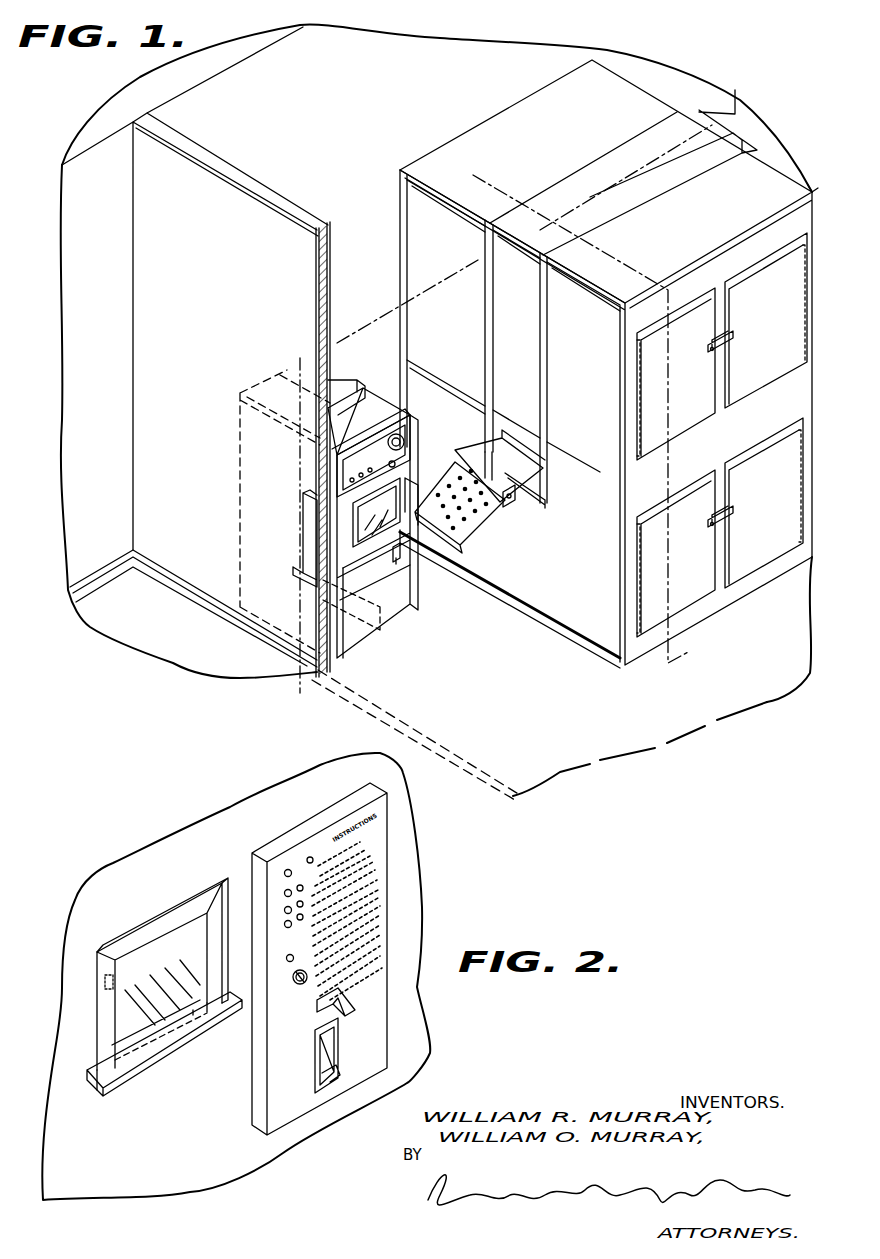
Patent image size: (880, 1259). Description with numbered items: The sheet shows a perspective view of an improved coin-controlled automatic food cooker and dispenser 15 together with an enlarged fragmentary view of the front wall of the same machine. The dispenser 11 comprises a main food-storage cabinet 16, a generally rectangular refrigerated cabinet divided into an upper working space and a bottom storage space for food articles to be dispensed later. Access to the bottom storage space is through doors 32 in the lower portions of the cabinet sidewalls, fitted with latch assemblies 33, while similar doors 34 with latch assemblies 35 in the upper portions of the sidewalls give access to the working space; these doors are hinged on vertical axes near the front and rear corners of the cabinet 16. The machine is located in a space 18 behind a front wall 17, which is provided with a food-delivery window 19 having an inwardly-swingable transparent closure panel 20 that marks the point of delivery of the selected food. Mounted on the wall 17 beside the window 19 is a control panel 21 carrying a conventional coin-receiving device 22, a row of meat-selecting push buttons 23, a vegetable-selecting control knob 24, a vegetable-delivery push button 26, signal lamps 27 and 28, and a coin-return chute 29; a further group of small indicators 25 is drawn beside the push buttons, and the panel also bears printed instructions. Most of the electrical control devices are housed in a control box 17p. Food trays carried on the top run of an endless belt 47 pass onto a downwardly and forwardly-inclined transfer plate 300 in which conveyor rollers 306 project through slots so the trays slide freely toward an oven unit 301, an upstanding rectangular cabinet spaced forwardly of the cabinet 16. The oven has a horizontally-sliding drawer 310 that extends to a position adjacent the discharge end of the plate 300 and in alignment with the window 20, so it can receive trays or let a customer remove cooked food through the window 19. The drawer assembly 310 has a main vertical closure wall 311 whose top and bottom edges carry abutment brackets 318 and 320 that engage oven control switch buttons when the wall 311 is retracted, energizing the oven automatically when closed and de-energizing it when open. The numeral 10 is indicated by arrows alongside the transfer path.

In FIG. 1, the dispenser 11 is at (399, 167).
In FIG. 1, the coin-controlled automatic food cooker and dispenser 15 is at (728, 76).
In FIG. 1, the main food-storage cabinet 16 is at (400, 218).
In FIG. 1, the front wall 17 is at (152, 237).
In FIG. 2, the front wall 17 is at (303, 775).
In FIG. 1, the control box 17p is at (372, 448).
In FIG. 1, the space 18 is at (275, 143).
In FIG. 2, the food-delivery window 19 is at (185, 910).
In FIG. 2, the transparent closure panel 20 is at (155, 950).
In FIG. 2, the control panel 21 is at (256, 1110).
In FIG. 2, the coin-receiving device 22 is at (317, 1006).
In FIG. 2, the meat-selecting push buttons 23 is at (284, 925).
In FIG. 2, the vegetable-selecting control knob 24 is at (296, 983).
In FIG. 2, the indicator lights 25 is at (304, 888).
In FIG. 2, the vegetable-delivery push button 26 is at (293, 956).
In FIG. 2, the signal lamp 27 is at (288, 868).
In FIG. 2, the signal lamp 28 is at (310, 857).
In FIG. 2, the coin-return chute 29 is at (342, 1070).
In FIG. 1, the doors 32 is at (698, 595).
In FIG. 1, the latch assemblies 33 is at (728, 515).
In FIG. 1, the doors 34 is at (740, 290).
In FIG. 1, the latch assemblies 35 is at (730, 338).
In FIG. 1, the endless belt 47 is at (497, 463).
In FIG. 1, the article path 10 is at (492, 462).
In FIG. 1, the transfer plate 300 is at (450, 473).
In FIG. 1, the oven unit 301 is at (413, 443).
In FIG. 1, the conveyor rollers 306 is at (470, 527).
In FIG. 1, the sliding drawer 310 is at (385, 555).
In FIG. 1, the main vertical closure wall 311 is at (358, 503).
In FIG. 1, the abutment bracket 318 is at (390, 468).
In FIG. 1, the abutment bracket 320 is at (402, 552).